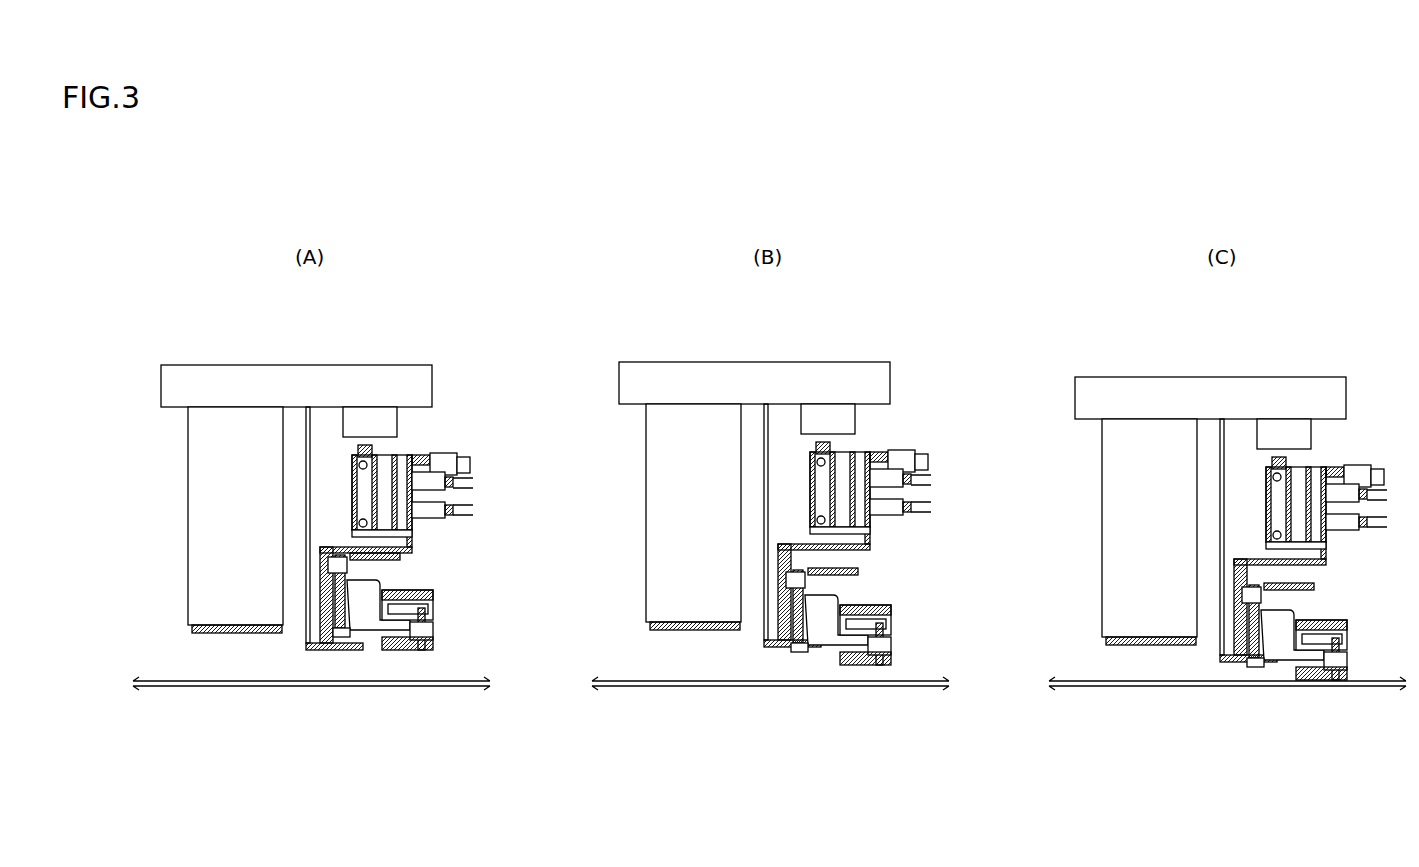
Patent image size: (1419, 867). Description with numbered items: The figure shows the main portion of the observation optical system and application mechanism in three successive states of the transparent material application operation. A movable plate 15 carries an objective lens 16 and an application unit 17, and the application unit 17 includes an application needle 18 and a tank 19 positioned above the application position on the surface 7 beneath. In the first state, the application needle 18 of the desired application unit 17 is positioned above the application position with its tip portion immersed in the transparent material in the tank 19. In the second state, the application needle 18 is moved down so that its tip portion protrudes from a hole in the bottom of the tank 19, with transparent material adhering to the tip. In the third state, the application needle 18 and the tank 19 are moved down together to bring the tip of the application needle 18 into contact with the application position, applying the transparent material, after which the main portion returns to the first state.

The substrate 7 is at (189, 688).
The movable plate 15 is at (385, 382).
The objective lens 16 is at (230, 425).
The application unit 17 is at (404, 654).
The application needle 18 is at (430, 613).
The tank 19 is at (434, 642).